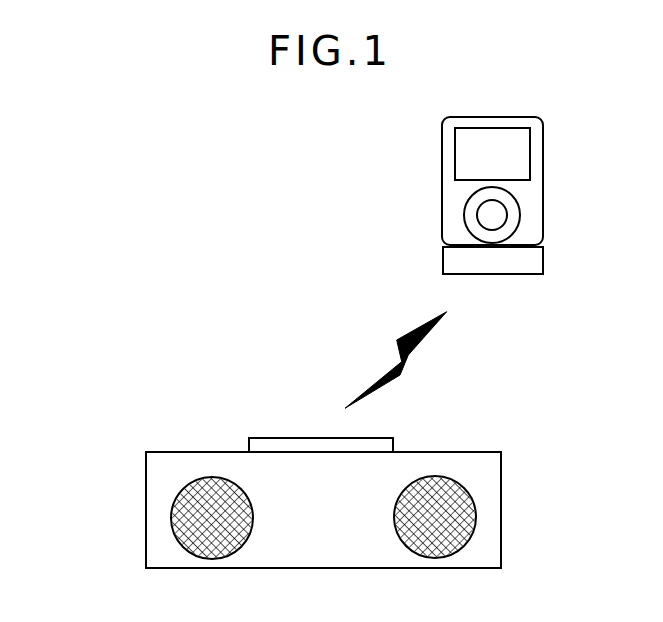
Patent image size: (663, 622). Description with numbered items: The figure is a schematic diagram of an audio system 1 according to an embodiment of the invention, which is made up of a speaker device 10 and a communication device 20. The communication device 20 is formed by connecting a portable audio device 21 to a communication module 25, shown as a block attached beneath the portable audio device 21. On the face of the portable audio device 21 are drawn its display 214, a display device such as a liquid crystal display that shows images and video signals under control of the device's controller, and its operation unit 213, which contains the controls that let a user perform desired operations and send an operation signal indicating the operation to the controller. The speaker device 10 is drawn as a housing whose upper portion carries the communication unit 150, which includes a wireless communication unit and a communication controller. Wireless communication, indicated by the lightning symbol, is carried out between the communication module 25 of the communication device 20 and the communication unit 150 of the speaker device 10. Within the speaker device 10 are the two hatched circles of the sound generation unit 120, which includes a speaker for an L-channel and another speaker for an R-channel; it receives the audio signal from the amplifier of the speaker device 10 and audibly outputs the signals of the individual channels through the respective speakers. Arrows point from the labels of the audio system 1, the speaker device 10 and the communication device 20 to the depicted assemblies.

The audio system 1 is at (186, 251).
The speaker device 10 is at (488, 433).
The communication device 20 is at (338, 172).
The portable audio device 21 is at (442, 200).
The communication module 25 is at (452, 263).
The sound generation unit 120 is at (172, 518).
The communication unit 150 is at (280, 437).
The operation unit 213 is at (473, 220).
The display 214 is at (467, 153).